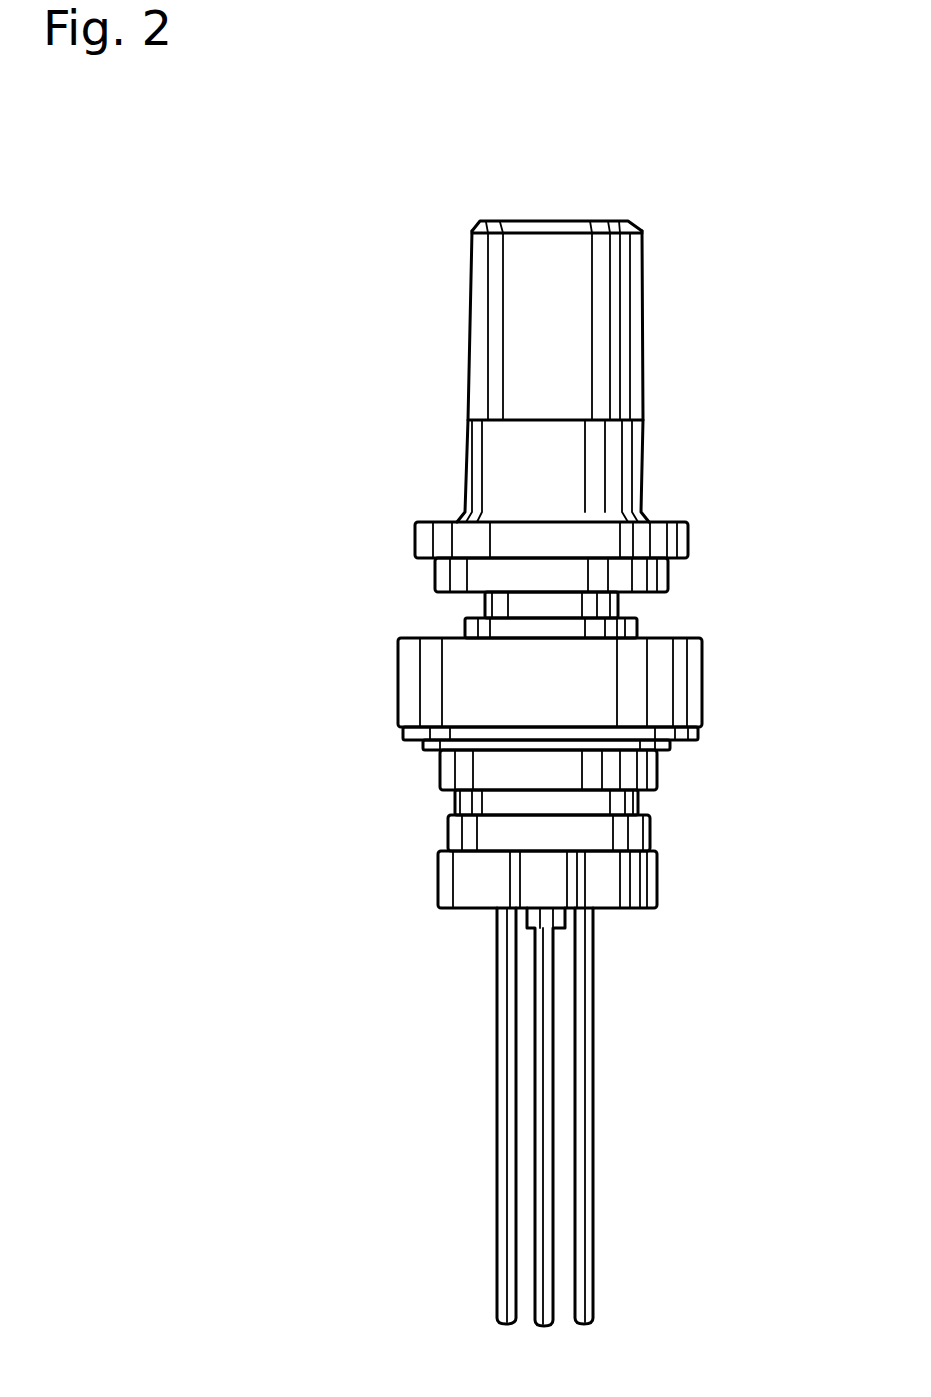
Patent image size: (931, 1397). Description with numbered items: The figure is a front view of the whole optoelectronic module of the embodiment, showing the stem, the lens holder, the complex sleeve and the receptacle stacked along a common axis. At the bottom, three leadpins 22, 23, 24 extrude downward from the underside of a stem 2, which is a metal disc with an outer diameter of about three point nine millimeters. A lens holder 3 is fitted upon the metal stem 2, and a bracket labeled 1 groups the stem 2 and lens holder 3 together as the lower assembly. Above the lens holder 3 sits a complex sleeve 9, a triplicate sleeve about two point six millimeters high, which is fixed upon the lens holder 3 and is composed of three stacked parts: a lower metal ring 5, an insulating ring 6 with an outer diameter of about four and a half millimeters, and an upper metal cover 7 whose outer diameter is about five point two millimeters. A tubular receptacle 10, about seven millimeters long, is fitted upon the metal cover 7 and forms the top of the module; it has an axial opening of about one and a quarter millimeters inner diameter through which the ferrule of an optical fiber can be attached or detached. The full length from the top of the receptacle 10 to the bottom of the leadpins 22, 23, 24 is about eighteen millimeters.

The stem 1 is at (586, 875).
The stem 2 is at (551, 906).
The lens holder 3 is at (650, 818).
The lower metal ring 5 is at (584, 767).
The insulating ring 6 is at (687, 737).
The upper metal cover 7 is at (640, 680).
The complex sleeve 9 is at (618, 712).
The receptacle 10 is at (673, 637).
The leadpin 22 is at (497, 1308).
The leadpin 23 is at (535, 1318).
The leadpin 24 is at (587, 1280).